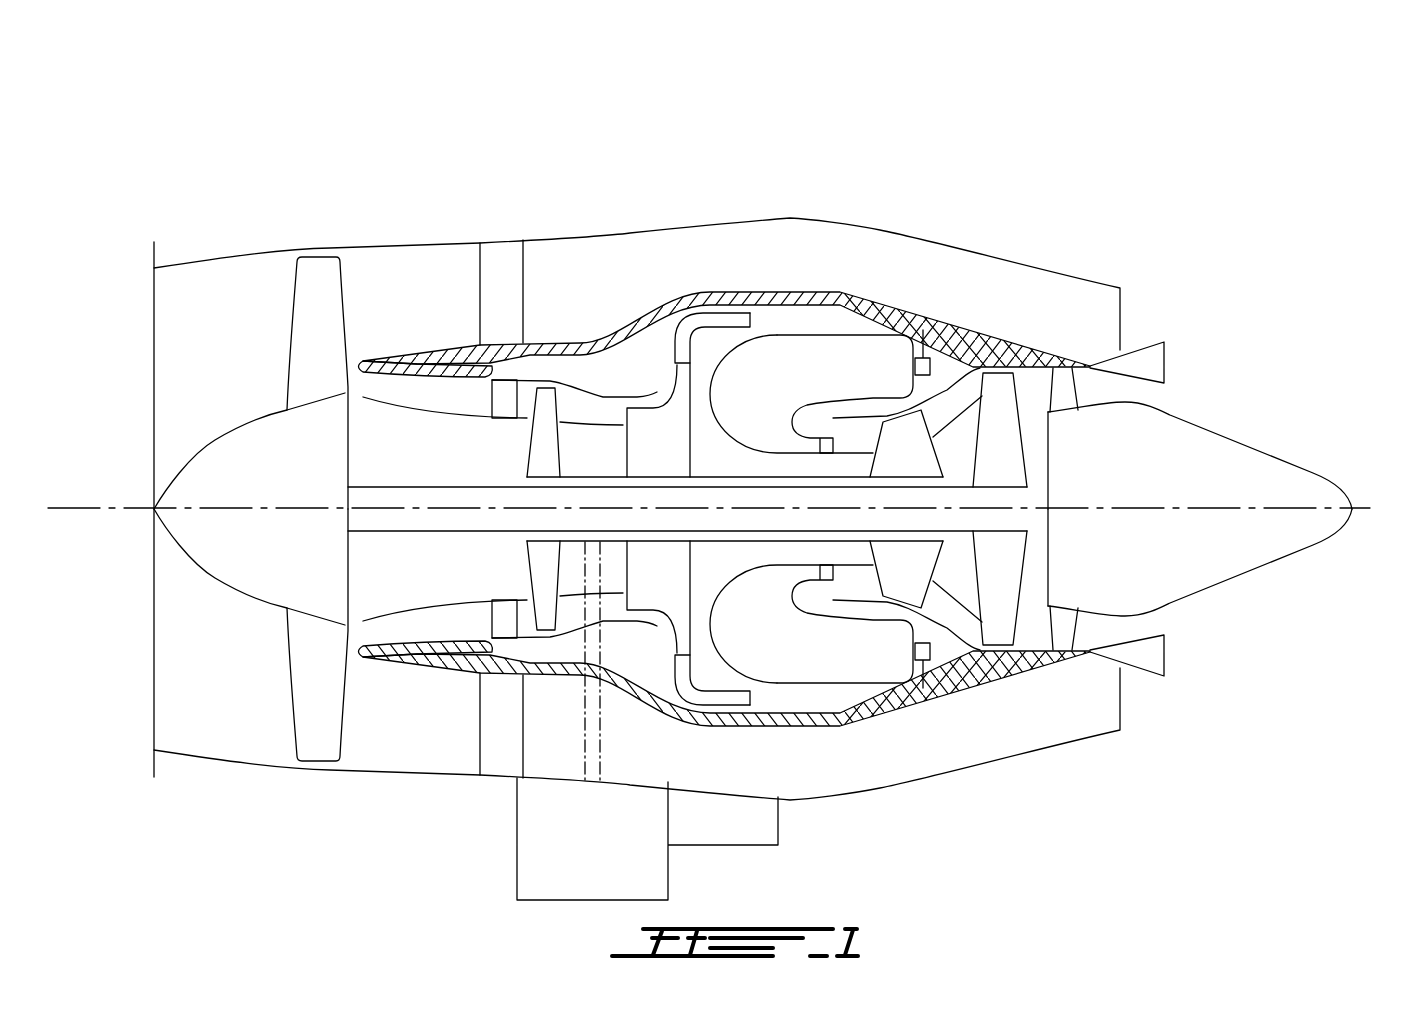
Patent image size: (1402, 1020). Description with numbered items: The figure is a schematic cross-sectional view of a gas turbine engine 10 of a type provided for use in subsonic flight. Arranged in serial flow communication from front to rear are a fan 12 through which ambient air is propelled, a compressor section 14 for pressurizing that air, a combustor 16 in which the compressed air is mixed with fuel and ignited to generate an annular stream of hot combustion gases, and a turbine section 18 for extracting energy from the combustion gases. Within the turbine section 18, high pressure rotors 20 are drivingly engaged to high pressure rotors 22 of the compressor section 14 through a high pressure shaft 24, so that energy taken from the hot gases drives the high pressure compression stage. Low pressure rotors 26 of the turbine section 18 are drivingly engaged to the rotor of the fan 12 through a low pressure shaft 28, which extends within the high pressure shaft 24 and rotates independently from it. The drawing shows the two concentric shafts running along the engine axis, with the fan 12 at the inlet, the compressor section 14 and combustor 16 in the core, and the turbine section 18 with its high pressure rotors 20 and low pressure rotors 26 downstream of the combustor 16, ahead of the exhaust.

The gas turbine engine 10 is at (990, 146).
The fan 12 is at (318, 678).
The compressor section 14 is at (582, 403).
The combustor 16 is at (815, 358).
The turbine section 18 is at (960, 665).
The high pressure rotor 20 is at (923, 405).
The high pressure rotor 22 is at (657, 427).
The high pressure shaft 24 is at (820, 477).
The low pressure rotor 26 is at (1005, 418).
The low pressure shaft 28 is at (412, 532).